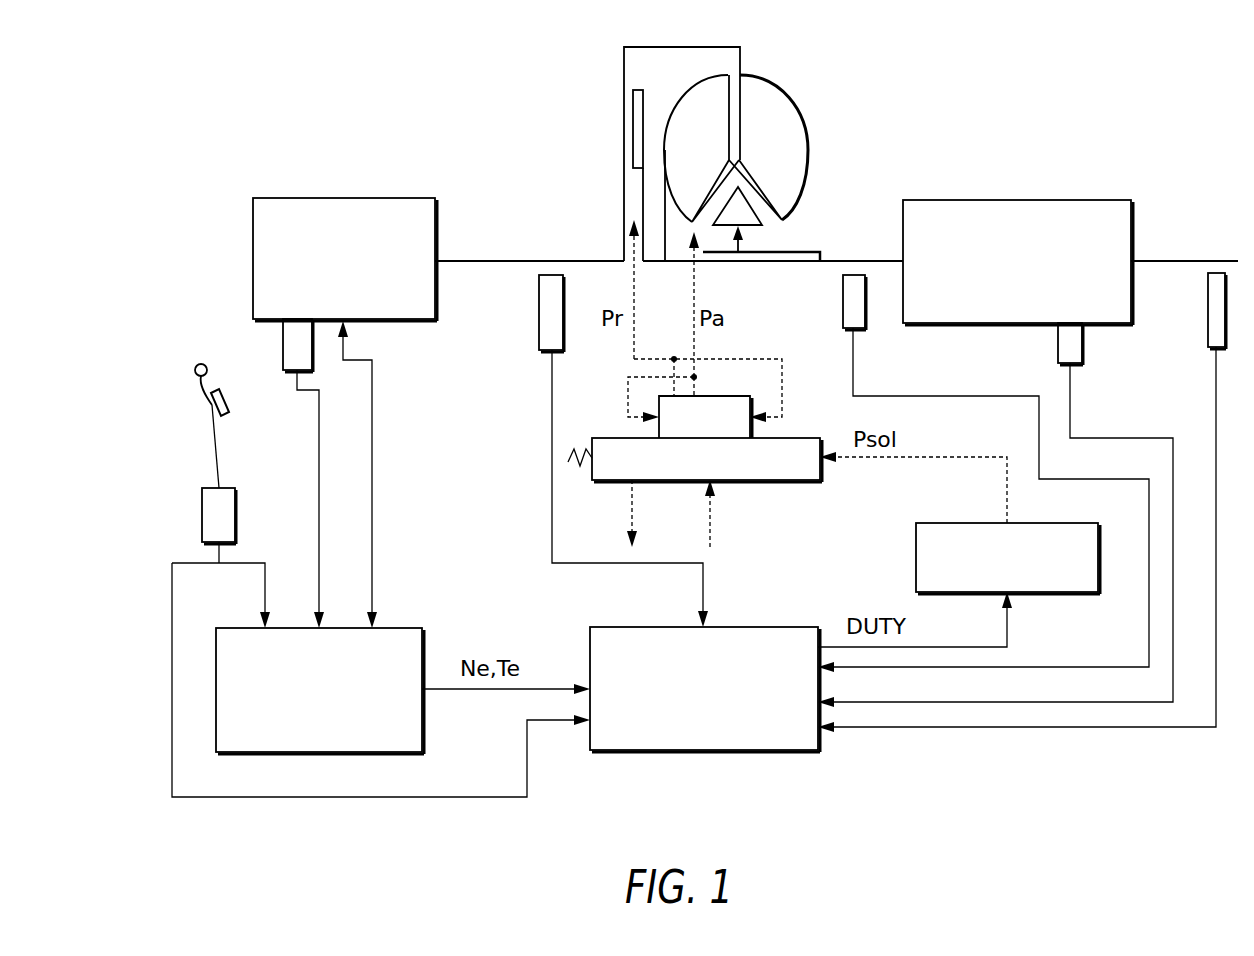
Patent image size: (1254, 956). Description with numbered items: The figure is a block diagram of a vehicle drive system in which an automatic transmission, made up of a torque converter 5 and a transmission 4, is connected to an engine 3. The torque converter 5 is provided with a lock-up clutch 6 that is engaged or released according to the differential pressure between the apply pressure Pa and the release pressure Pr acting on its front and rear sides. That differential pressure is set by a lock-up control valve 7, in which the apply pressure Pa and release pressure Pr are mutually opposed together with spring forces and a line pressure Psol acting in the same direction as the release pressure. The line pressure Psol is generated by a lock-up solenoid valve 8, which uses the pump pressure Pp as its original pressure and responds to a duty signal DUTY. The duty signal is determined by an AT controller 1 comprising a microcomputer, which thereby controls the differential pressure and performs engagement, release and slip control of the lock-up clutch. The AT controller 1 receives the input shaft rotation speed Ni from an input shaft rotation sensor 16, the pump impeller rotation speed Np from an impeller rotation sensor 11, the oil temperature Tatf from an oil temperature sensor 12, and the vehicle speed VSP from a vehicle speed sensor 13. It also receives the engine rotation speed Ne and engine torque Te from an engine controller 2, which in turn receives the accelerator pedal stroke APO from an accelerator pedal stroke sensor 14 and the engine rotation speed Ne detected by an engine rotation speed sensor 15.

The AT controller 1 is at (640, 635).
The engine controller 2 is at (246, 636).
The engine 3 is at (275, 203).
The transmission 4 is at (927, 205).
The torque converter 5 is at (797, 72).
The lock-up clutch 6 is at (641, 68).
The lock-up control valve 7 is at (804, 408).
The lock-up solenoid valve 8 is at (943, 530).
The impeller rotation sensor 11 is at (538, 325).
The oil temperature sensor 12 is at (1057, 338).
The vehicle speed sensor 13 is at (1226, 312).
The accelerator pedal stroke sensor 14 is at (202, 514).
The engine rotation speed sensor 15 is at (283, 333).
The input shaft rotation sensor 16 is at (842, 290).